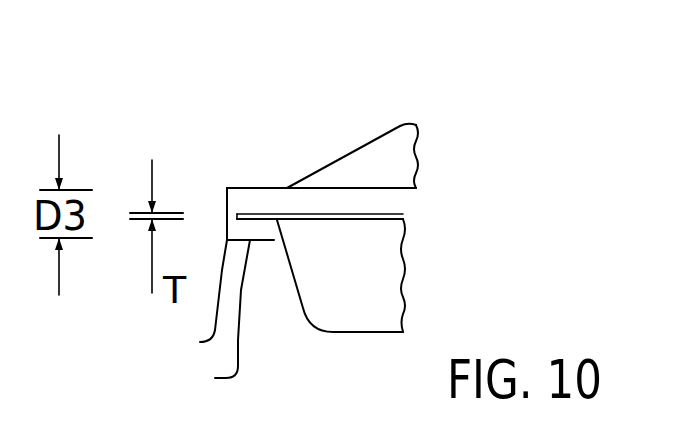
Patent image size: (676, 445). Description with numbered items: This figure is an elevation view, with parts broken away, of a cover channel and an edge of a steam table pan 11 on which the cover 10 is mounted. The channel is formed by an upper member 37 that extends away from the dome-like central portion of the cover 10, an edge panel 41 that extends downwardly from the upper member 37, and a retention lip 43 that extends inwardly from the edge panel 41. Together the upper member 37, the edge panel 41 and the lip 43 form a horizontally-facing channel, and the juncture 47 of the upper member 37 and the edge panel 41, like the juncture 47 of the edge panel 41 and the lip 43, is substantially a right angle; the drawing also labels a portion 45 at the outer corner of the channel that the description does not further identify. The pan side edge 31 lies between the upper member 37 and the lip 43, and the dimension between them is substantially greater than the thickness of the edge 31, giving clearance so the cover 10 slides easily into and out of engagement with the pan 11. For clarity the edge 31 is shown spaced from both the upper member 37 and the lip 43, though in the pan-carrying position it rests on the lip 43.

The cover 10 is at (364, 150).
The pan 11 is at (408, 273).
The side edge 31 is at (270, 220).
The upper member 37 is at (260, 187).
The edge panel 41 is at (226, 199).
The retention lip 43 is at (223, 324).
The top corner 45 is at (228, 187).
The juncture 47 is at (194, 302).